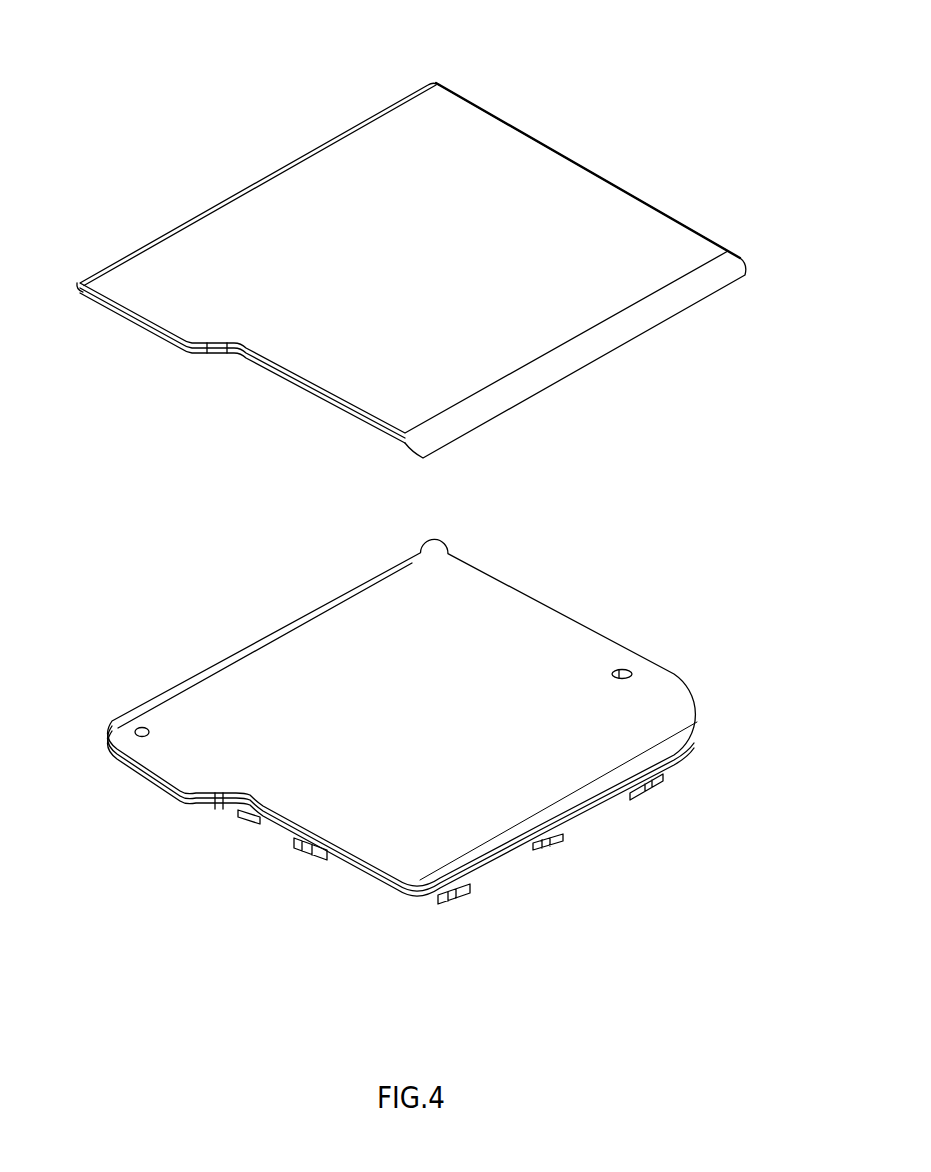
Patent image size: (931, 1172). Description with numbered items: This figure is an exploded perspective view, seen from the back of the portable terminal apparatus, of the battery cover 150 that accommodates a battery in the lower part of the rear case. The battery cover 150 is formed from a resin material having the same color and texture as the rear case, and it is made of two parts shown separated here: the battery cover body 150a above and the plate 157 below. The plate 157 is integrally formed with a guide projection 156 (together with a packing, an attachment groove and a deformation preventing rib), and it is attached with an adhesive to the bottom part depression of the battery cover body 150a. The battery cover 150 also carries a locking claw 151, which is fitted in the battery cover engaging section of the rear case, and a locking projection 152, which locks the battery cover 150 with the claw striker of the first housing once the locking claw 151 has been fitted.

The battery cover 150 is at (411, 229).
The battery cover body 150a is at (467, 125).
The locking claw 151 is at (612, 184).
The plate 157 is at (560, 635).
The locking projection 152 is at (307, 860).
The guide projection 156 is at (552, 848).